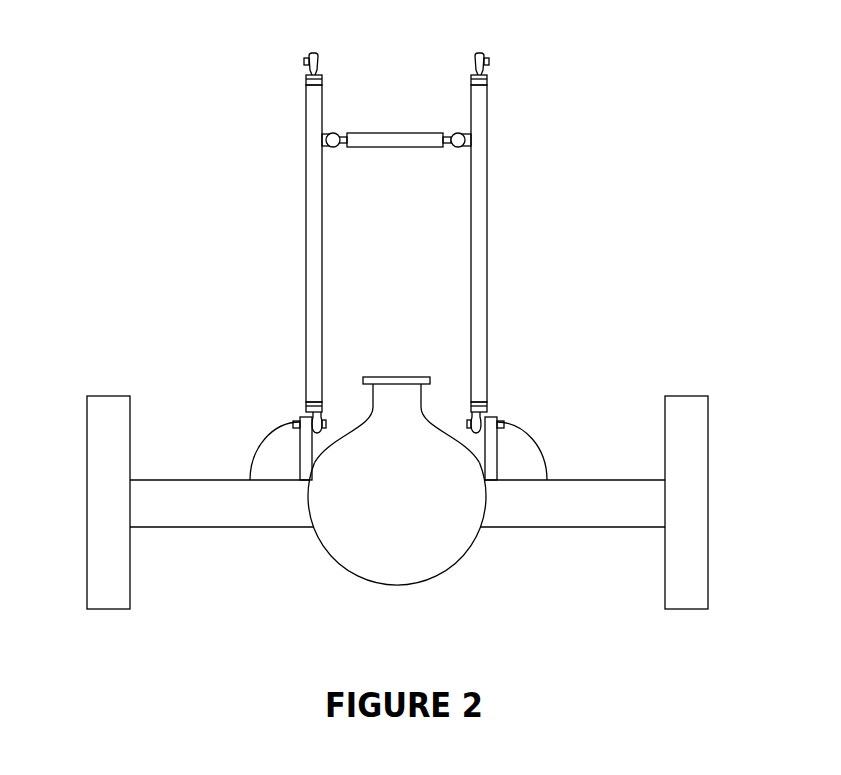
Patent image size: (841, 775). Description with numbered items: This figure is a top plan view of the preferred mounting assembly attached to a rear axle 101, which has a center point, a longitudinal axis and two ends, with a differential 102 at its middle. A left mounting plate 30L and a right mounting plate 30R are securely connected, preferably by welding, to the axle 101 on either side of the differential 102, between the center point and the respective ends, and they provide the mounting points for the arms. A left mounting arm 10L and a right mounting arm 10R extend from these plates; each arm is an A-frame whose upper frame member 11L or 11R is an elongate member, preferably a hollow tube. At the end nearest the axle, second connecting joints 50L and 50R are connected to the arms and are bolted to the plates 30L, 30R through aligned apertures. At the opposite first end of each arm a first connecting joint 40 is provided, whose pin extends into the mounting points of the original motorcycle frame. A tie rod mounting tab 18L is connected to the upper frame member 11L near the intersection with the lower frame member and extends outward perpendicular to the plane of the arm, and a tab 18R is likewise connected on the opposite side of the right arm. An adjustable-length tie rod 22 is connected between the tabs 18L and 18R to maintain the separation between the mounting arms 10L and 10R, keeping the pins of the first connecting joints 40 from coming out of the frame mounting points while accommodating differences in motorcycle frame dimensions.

The left mounting arm 10L is at (259, 243).
The right mounting arm 10R is at (530, 243).
The upper frame member of left mounting arm 11L is at (317, 233).
The upper frame member of right mounting arm 11R is at (478, 233).
The left tie rod mounting tab 18L is at (325, 132).
The right tie rod mounting tab 18R is at (465, 150).
The tie rod 22 is at (408, 132).
The left mounting plate 30L is at (268, 442).
The right mounting plate 30R is at (530, 442).
The first connecting joint 40 is at (310, 55).
The left second connecting joint 50L is at (324, 412).
The right second connecting joint 50R is at (470, 412).
The rear axle 101 is at (552, 513).
The differential 102 is at (395, 537).